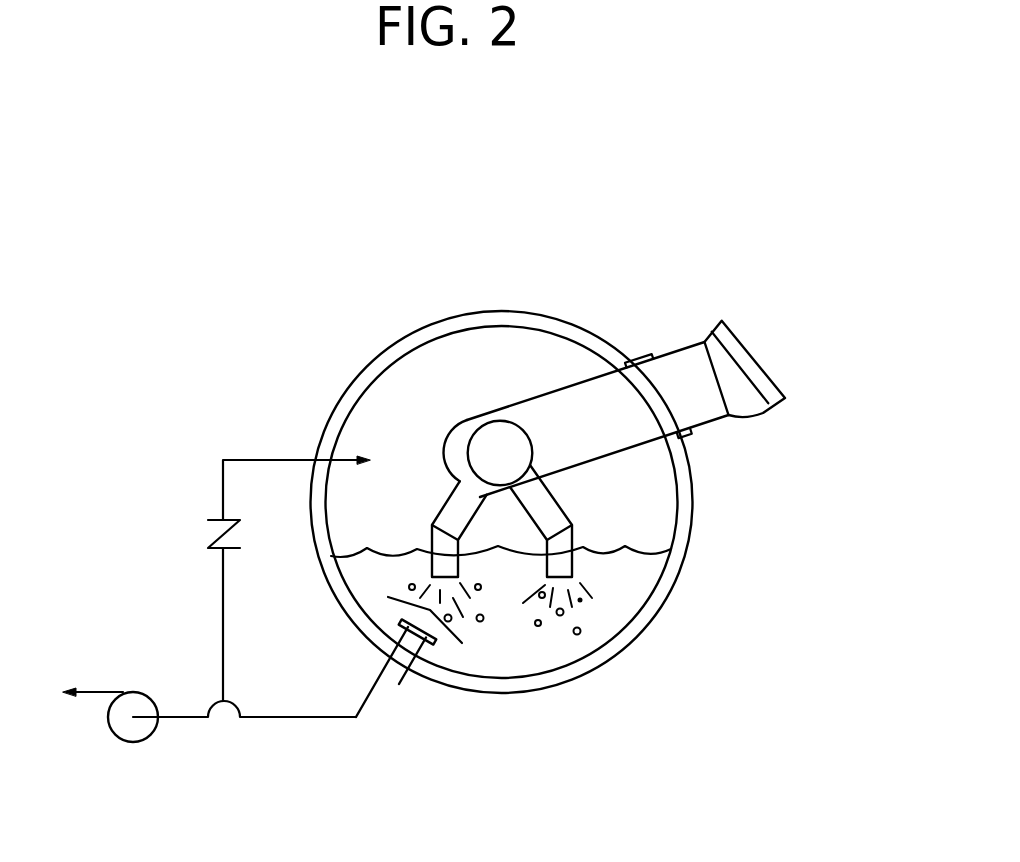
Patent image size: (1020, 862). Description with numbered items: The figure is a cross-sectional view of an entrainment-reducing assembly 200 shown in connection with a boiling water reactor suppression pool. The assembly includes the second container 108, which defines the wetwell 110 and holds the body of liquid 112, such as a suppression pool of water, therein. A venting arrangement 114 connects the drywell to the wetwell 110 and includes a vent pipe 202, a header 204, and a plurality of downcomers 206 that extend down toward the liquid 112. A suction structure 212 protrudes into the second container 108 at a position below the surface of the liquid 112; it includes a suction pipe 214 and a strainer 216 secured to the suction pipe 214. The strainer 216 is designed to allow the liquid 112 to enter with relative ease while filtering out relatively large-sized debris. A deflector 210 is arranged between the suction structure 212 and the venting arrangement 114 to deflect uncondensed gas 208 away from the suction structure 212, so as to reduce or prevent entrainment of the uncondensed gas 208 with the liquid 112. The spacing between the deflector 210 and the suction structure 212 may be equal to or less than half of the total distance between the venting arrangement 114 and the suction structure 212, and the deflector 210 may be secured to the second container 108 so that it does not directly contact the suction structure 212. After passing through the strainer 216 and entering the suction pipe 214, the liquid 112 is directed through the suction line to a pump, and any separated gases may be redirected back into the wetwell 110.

The entrainment-reducing assembly 200 is at (530, 189).
The second container 108 is at (343, 400).
The wetwell 110 is at (643, 482).
The body of liquid 112 is at (642, 567).
The venting arrangement 114 is at (773, 343).
The vent pipe 202 is at (672, 349).
The header 204 is at (500, 419).
The downcomers 206 is at (447, 503).
The uncondensed gas 208 is at (483, 620).
The deflector 210 is at (459, 646).
The suction structure 212 is at (408, 687).
The suction pipe 214 is at (387, 660).
The strainer 216 is at (400, 622).